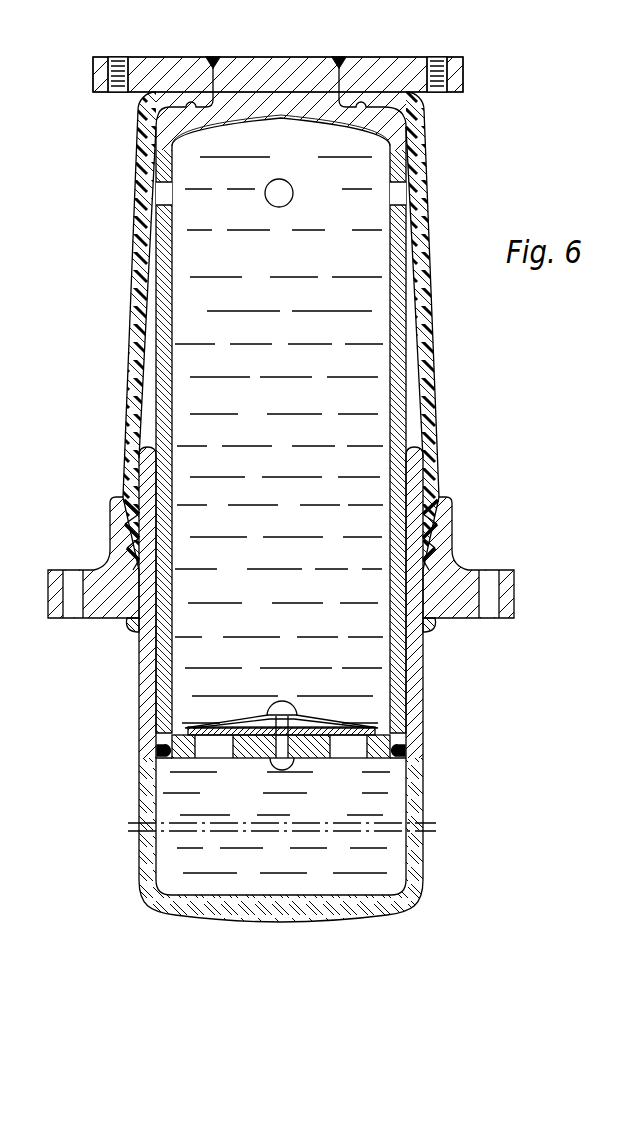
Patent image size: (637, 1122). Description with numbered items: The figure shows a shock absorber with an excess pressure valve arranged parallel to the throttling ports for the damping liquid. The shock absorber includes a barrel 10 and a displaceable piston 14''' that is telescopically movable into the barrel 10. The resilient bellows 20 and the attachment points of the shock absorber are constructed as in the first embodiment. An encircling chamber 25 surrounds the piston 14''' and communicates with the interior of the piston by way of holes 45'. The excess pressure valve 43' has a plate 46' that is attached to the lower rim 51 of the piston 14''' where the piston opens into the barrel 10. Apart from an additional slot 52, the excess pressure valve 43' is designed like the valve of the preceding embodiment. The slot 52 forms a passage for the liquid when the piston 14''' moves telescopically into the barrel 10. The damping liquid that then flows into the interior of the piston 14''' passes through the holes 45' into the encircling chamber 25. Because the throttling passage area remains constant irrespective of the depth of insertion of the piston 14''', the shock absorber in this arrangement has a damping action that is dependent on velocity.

The holes 45' is at (286, 187).
The resilient bellows 20 is at (417, 316).
The encircling chamber 25 is at (407, 419).
The piston 14''' is at (281, 598).
The lower rim 51 is at (391, 737).
The slot 52 is at (393, 760).
The plate 46' is at (281, 754).
The excess pressure valve 43' is at (281, 781).
The barrel 10 is at (408, 882).